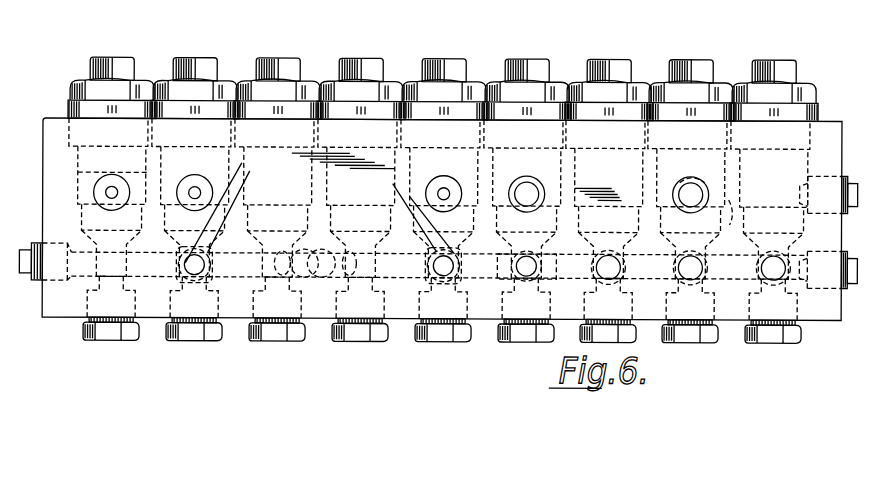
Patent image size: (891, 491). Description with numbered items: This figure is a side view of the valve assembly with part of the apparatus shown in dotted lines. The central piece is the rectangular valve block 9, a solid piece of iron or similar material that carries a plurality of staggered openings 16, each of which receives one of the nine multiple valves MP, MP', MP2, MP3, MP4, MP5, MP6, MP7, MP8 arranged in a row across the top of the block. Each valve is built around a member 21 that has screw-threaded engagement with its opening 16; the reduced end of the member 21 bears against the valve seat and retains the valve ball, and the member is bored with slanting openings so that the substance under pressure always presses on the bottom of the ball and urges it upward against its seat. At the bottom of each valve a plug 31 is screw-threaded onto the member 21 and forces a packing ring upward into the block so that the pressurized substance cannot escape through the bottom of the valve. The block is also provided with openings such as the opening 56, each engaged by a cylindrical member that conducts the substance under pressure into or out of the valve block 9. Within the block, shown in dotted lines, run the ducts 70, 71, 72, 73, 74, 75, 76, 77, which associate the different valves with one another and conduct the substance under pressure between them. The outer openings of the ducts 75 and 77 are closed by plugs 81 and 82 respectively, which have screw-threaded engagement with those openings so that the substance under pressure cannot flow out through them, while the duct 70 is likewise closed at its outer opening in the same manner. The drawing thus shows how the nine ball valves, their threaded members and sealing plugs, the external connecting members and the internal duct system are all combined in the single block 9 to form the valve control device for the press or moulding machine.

The valve block 9 is at (53, 135).
The opening 16 is at (78, 169).
The member 21 is at (99, 57).
The plug 31 is at (73, 82).
The opening 56 is at (188, 327).
The duct 70 is at (90, 264).
The duct 71 is at (225, 237).
The duct 72 is at (280, 264).
The duct 73 is at (329, 272).
The duct 74 is at (415, 229).
The duct 75 is at (576, 268).
The duct 76 is at (638, 262).
The duct 77 is at (731, 212).
The plug 81 is at (857, 194).
The plug 82 is at (33, 274).
The multiple valve MP is at (111, 170).
The multiple valve MP' is at (194, 170).
The multiple valve MP2 is at (277, 57).
The multiple valve MP3 is at (352, 57).
The multiple valve MP4 is at (435, 57).
The multiple valve MP5 is at (517, 57).
The multiple valve MP6 is at (599, 57).
The multiple valve MP7 is at (681, 57).
The multiple valve MP8 is at (764, 57).